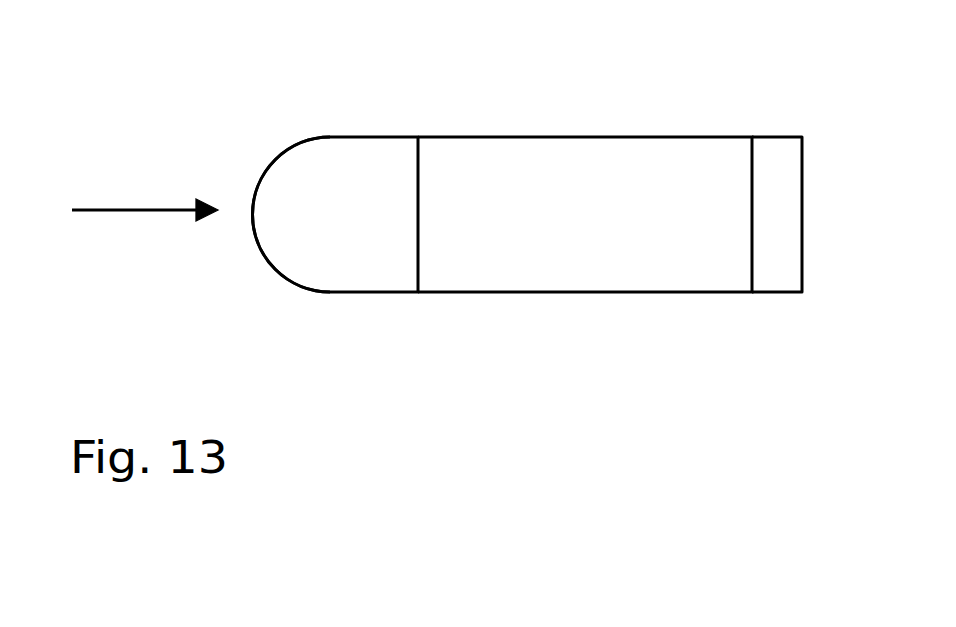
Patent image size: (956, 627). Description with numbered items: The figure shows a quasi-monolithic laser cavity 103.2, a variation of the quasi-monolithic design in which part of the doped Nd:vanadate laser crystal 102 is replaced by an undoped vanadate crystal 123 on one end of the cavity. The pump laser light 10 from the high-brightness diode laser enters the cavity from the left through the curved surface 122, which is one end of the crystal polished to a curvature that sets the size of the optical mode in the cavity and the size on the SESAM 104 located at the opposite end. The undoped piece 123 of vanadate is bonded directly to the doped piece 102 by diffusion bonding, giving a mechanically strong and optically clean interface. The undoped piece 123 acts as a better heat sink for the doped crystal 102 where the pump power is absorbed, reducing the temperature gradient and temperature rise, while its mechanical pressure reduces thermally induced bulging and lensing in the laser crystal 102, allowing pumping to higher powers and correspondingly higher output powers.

The laser light 10 is at (130, 213).
The Nd:vanadate laser crystal 102 is at (567, 157).
The cavity 103.2 is at (468, 244).
The SESAM 104 is at (770, 157).
The curved surface 122 is at (252, 181).
The undoped vanadate crystal 123 is at (350, 157).